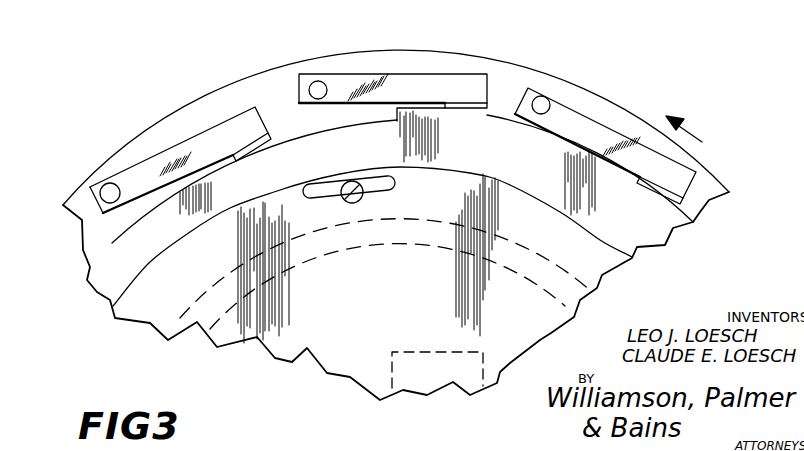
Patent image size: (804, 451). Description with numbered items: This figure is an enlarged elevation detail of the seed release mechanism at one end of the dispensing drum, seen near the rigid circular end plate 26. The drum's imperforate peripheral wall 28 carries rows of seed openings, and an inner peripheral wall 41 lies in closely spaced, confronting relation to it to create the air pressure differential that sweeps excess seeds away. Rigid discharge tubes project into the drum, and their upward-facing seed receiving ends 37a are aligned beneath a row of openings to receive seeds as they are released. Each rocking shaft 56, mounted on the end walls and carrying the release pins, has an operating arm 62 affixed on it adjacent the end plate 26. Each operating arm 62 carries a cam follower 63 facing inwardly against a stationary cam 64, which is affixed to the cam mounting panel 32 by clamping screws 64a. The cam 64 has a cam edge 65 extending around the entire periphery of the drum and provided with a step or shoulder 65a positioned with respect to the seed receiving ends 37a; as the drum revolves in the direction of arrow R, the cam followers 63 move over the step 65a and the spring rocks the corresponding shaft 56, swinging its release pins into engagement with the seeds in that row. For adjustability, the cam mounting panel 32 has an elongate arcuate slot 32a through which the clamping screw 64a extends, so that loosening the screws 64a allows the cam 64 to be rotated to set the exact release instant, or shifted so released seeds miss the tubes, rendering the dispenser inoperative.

The end plate 26 is at (120, 160).
The peripheral wall 28 is at (178, 316).
The cam mounting panel 32 is at (525, 234).
The arcuate slot 32a is at (388, 192).
The seed receiving ends 37a is at (429, 351).
The inner peripheral wall 41 is at (379, 252).
The shaft 56 is at (105, 185).
The operating arm 62 is at (208, 138).
The cam follower 63 is at (477, 108).
The stationary cam 64 is at (615, 221).
The clamping screws 64a is at (349, 185).
The cam edge 65 is at (112, 245).
The step 65a is at (396, 113).
The direction of drum rotation R is at (697, 136).